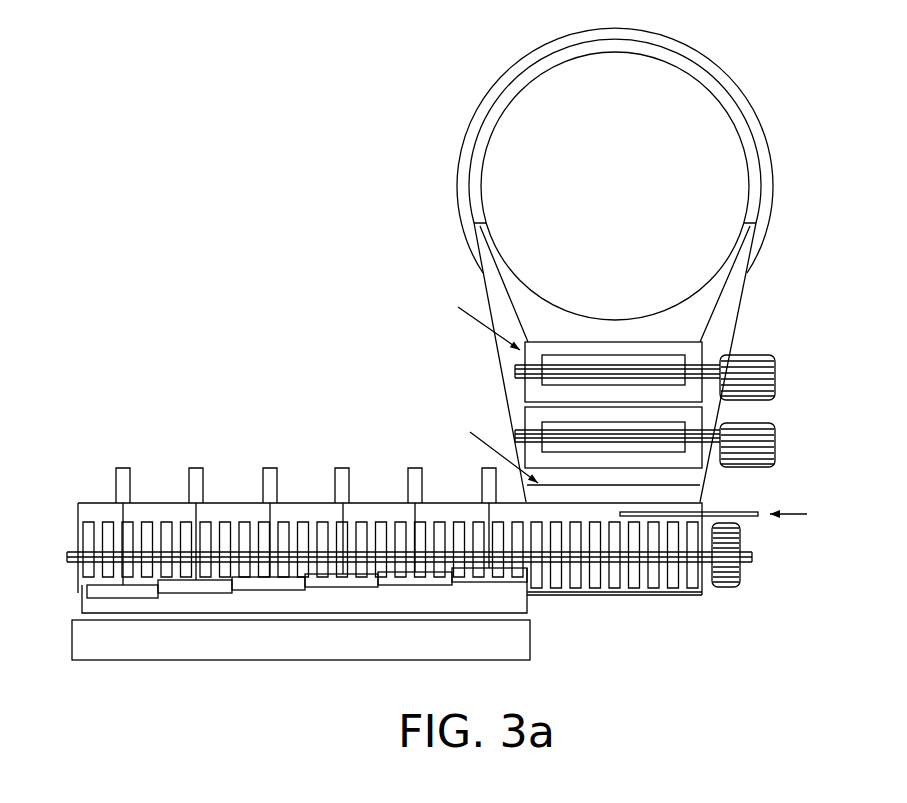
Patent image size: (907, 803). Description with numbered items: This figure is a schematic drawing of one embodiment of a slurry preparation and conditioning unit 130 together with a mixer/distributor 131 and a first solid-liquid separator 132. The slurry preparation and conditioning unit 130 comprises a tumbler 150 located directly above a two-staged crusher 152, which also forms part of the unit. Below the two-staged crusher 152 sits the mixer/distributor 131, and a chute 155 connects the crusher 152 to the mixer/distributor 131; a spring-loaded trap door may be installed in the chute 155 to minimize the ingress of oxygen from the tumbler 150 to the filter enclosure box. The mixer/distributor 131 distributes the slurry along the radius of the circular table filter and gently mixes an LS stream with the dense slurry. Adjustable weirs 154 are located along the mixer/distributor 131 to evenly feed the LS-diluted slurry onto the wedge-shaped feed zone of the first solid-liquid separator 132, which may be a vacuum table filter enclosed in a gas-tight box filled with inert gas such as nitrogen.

The slurry preparation and conditioning unit 130 is at (796, 199).
The tumbler 150 is at (493, 82).
The two-staged crusher 152 is at (705, 367).
The chute 155 is at (675, 493).
The adjustable weirs 154 is at (477, 575).
The mixer/distributor 131 is at (695, 600).
The first solid-liquid separator 132 is at (271, 668).